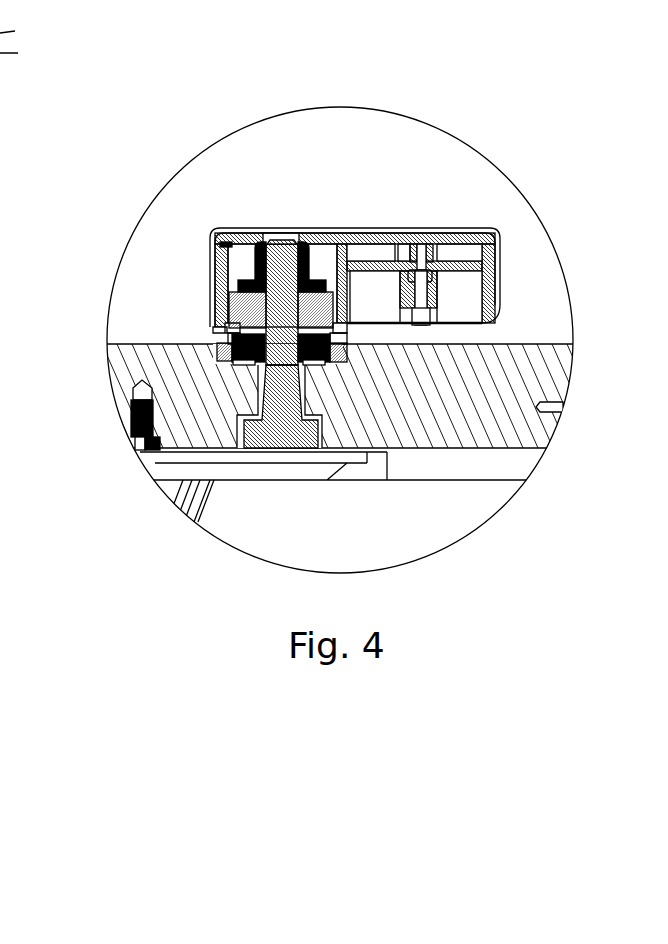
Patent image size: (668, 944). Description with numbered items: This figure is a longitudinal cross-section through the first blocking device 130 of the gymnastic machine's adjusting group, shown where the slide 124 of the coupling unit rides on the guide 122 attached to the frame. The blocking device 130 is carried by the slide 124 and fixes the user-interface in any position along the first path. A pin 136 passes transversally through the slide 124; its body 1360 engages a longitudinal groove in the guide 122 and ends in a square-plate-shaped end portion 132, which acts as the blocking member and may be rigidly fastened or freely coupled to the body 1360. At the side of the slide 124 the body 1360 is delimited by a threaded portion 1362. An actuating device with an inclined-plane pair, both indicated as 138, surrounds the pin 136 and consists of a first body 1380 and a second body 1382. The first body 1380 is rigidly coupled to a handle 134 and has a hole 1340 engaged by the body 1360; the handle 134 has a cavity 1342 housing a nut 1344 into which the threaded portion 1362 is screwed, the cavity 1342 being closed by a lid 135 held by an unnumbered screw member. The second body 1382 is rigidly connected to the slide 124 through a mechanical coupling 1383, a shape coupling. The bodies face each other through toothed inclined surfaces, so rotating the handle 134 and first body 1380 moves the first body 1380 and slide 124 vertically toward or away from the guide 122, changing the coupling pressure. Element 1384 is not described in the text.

The first blocking device 130 is at (334, 323).
The guide 122 is at (413, 463).
The slide 124 is at (486, 428).
The end portion 132 is at (274, 434).
The handle 134 is at (498, 320).
The lid 135 is at (475, 232).
The pin 136 is at (260, 403).
The actuating device with pair with inclined plane 138 is at (380, 336).
The hole 1340 is at (232, 340).
The cavity 1342 is at (322, 240).
The nut 1344 is at (262, 247).
The body 1360 is at (276, 280).
The threaded portion 1362 is at (277, 250).
The first body 1380 is at (270, 325).
The second body 1382 is at (150, 437).
The mechanical coupling 1383 is at (337, 345).
The wire 1384 is at (35, 35).